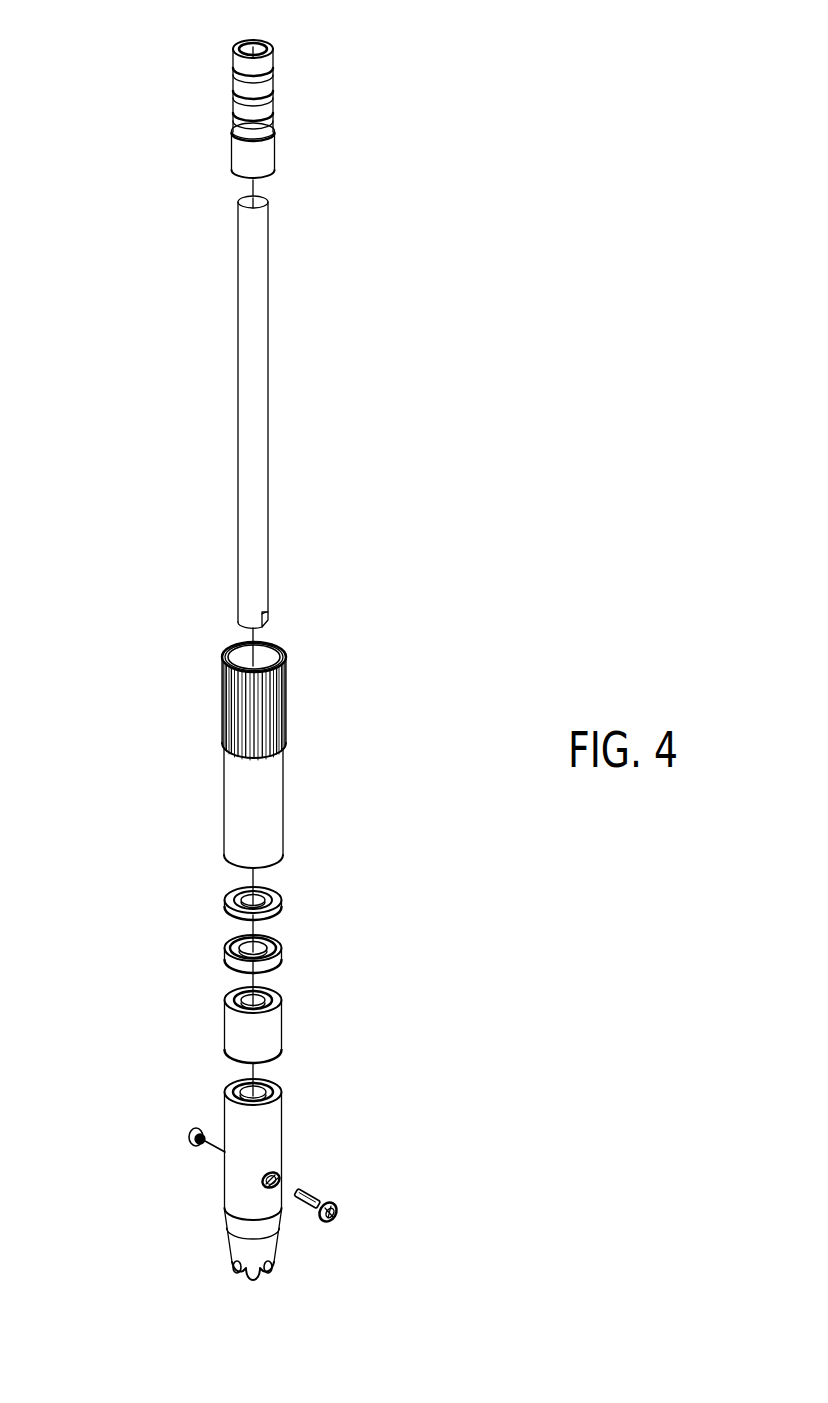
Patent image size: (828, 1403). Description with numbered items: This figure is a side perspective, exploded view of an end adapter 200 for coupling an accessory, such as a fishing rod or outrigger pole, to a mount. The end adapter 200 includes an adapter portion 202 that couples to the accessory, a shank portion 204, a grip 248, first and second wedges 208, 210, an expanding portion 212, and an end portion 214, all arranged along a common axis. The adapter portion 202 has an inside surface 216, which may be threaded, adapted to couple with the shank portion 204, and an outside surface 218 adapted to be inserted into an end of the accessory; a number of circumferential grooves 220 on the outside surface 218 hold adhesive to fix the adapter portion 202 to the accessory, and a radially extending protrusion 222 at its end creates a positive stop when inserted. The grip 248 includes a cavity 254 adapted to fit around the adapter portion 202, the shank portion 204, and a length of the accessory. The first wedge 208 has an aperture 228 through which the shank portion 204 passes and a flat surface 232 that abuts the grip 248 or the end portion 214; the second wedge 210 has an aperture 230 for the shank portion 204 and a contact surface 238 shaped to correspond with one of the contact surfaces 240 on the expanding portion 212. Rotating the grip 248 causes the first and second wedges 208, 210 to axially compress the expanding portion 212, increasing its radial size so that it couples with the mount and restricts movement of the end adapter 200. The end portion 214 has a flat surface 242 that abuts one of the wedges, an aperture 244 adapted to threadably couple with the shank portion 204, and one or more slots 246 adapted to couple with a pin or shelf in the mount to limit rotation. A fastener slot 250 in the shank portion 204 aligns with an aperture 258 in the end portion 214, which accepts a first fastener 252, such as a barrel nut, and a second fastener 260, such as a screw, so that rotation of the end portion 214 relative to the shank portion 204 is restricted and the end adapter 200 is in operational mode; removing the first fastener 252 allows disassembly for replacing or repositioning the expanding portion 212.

The end adapter 200 is at (401, 217).
The adapter portion 202 is at (273, 53).
The shank portion 204 is at (258, 313).
The first wedge 208 is at (226, 902).
The second wedge 210 is at (226, 1062).
The expanding portion 212 is at (282, 952).
The end portion 214 is at (283, 1127).
The inside surface 216 is at (240, 48).
The outside surface 218 is at (274, 100).
The circumferential grooves 220 is at (248, 107).
The radially extending protrusion 222 is at (236, 167).
The aperture 228 is at (256, 897).
The aperture 230 is at (232, 997).
The flat surface 232 is at (282, 905).
The contact surface 238 is at (283, 1005).
The contact surfaces 240 is at (231, 945).
The flat surface 242 is at (280, 1085).
The aperture 244 is at (228, 1090).
The slots 246 is at (234, 1268).
The grip 248 is at (224, 828).
The fastener slot 250 is at (268, 617).
The first fastener 252 is at (337, 1206).
The cavity 254 is at (243, 658).
The aperture 258 is at (283, 1177).
The second fastener 260 is at (189, 1137).